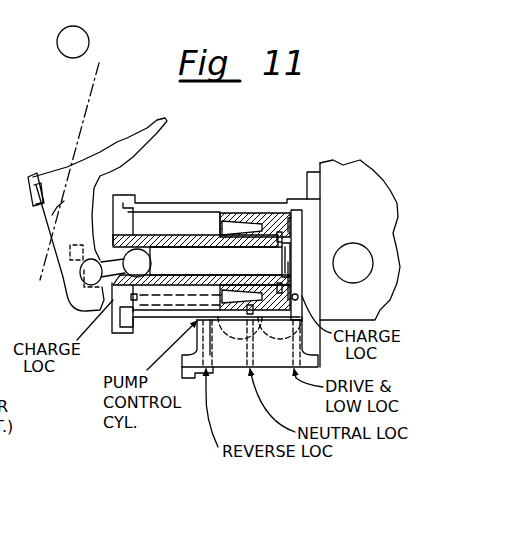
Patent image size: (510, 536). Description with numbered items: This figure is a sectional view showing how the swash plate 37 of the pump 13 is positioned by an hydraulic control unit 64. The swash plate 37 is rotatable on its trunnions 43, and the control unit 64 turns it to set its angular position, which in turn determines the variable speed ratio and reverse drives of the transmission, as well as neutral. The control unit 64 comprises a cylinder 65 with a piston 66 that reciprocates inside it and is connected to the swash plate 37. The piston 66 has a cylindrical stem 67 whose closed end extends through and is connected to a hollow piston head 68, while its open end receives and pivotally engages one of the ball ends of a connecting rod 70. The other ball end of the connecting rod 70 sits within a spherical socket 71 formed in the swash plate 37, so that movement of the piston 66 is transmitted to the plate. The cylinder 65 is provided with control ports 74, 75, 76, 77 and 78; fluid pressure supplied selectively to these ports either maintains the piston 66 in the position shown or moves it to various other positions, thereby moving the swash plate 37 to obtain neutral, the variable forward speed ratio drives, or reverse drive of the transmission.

The pump 13 is at (168, 122).
The trunnions 43 is at (88, 36).
The swash plate 37 is at (48, 214).
The hydraulic control unit 64 is at (204, 201).
The cylinder 65 is at (155, 209).
The piston 66 is at (181, 232).
The cylindrical stem 67 is at (176, 243).
The hollow piston head 68 is at (250, 213).
The connecting rod 70 is at (80, 288).
The spherical socket 71 is at (89, 269).
The control port 74 is at (127, 300).
The control port 75 is at (210, 318).
The control port 76 is at (250, 317).
The control port 77 is at (284, 343).
The control port 78 is at (300, 293).